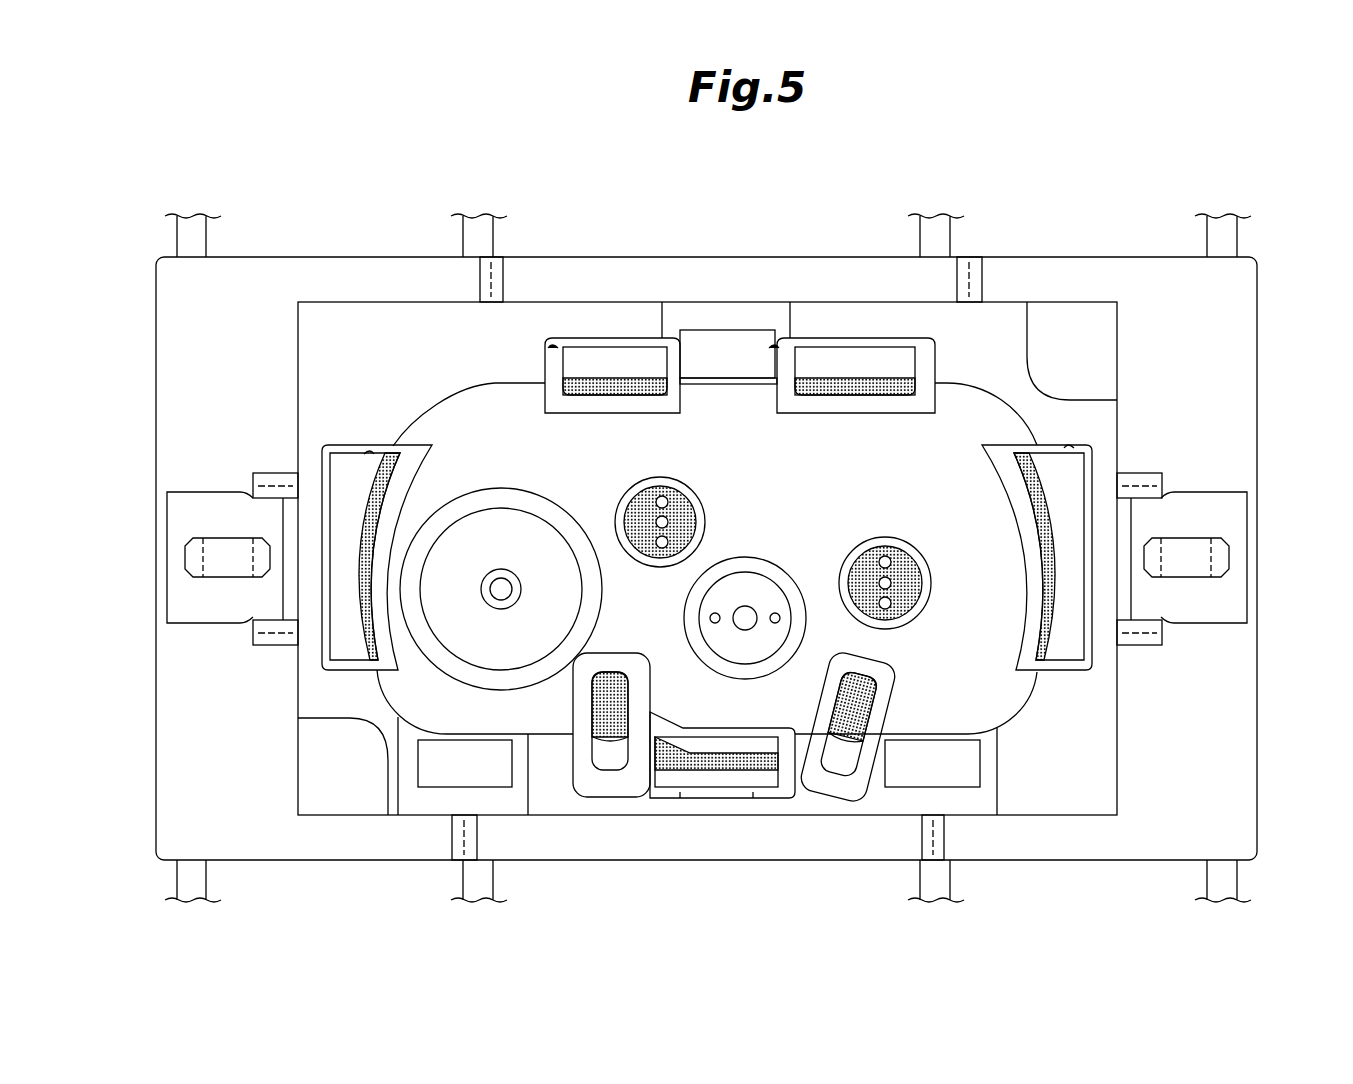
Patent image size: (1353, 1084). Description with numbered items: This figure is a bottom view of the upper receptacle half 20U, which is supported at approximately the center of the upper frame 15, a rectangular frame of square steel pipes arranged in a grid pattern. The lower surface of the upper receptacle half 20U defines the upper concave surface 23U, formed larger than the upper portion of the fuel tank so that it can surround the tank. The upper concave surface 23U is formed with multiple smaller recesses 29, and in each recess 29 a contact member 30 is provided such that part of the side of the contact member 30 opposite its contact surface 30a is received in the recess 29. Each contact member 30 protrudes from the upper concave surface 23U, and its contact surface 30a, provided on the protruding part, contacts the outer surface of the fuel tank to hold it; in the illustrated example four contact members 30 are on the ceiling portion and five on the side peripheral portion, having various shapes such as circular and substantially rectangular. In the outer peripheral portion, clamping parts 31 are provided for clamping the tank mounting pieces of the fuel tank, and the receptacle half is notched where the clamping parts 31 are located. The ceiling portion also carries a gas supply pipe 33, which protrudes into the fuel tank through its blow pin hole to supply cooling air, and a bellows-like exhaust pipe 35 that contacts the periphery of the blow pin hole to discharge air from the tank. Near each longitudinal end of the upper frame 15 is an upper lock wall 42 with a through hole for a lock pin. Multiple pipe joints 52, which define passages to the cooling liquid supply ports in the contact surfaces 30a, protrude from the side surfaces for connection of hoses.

The upper frame 15 is at (170, 878).
The upper receptacle half 20U is at (540, 298).
The upper concave surface 23U is at (458, 430).
The recess 29 is at (550, 347).
The contact member 30 is at (625, 365).
The contact surface 30a is at (378, 490).
The clamping part 31 is at (712, 345).
The gas supply pipe 33 is at (500, 580).
The exhaust pipe 35 is at (748, 610).
The upper lock wall 42 is at (188, 557).
The pipe joint 52 is at (503, 288).